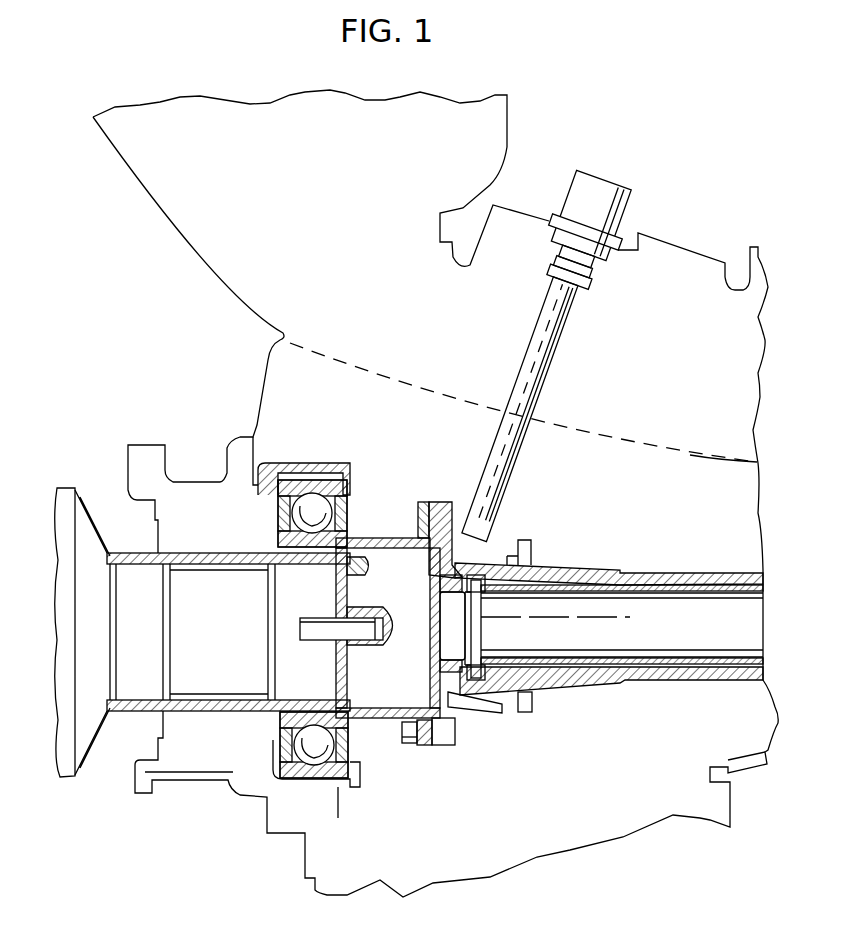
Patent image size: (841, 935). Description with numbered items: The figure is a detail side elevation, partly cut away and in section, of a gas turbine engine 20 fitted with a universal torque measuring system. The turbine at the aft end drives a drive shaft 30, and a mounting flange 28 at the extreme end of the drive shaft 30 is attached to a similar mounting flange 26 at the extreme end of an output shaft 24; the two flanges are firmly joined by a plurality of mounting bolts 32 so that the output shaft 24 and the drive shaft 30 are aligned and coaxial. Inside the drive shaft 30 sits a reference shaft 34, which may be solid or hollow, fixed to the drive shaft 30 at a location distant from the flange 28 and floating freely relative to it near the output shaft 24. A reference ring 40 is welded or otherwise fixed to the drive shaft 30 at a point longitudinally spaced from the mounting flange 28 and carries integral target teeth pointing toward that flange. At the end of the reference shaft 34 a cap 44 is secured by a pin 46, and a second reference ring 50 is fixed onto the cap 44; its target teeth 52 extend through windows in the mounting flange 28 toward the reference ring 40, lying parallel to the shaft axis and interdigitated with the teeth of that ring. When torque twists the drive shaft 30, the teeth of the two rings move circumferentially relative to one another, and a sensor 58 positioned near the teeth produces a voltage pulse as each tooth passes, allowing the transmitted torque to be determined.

The gas turbine engine 20 is at (205, 262).
The output shaft 24 is at (200, 712).
The mounting flange 26 is at (417, 520).
The mounting flange 28 is at (442, 505).
The drive shaft 30 is at (601, 573).
The mounting bolts 32 is at (407, 744).
The reference shaft 34 is at (660, 665).
The reference ring 40 is at (534, 712).
The cap 44 is at (428, 652).
The pin 46 is at (487, 636).
The second reference ring 50 is at (428, 573).
The target teeth 52 is at (477, 712).
The sensor 58 is at (538, 344).